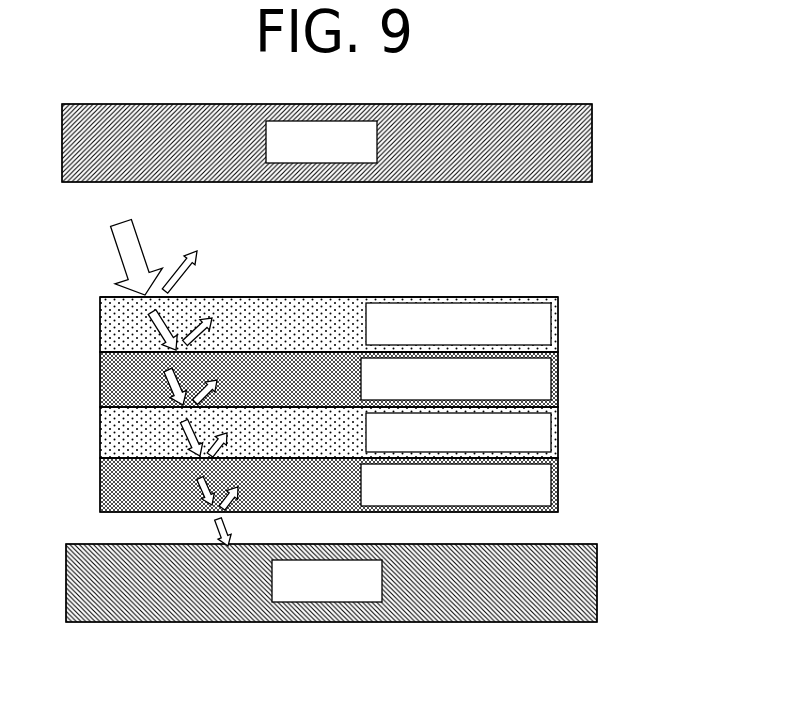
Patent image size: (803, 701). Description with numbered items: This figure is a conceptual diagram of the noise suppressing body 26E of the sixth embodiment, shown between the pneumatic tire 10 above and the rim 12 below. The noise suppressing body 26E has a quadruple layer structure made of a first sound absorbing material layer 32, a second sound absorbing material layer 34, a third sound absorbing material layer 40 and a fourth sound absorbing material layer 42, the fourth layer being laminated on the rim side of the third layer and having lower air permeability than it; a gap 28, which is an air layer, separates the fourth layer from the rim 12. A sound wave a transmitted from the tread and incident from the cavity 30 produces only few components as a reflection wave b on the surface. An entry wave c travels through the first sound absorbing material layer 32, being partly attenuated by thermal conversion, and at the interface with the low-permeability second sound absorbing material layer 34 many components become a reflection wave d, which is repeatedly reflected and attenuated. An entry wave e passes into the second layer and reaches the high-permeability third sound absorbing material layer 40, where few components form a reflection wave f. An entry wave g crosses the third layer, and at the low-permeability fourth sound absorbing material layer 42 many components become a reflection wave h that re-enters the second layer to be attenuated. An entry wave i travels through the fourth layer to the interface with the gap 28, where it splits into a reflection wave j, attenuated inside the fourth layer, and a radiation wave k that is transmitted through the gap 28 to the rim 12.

The pneumatic tire 10 is at (592, 141).
The rim 12 is at (597, 582).
The noise suppressing body 26E is at (481, 284).
The gap 28 is at (523, 530).
The cavity 30 is at (379, 358).
The first sound absorbing material layer 32 is at (558, 322).
The second sound absorbing material layer 34 is at (558, 378).
The third sound absorbing material layer 40 is at (558, 430).
The fourth sound absorbing material layer 42 is at (558, 483).
The sound wave a is at (118, 265).
The reflection wave b is at (182, 276).
The entry wave c is at (148, 327).
The reflection wave d is at (205, 339).
The entry wave e is at (168, 384).
The reflection wave f is at (210, 389).
The entry wave g is at (185, 432).
The reflection wave h is at (232, 442).
The entry wave i is at (200, 487).
The reflection wave j is at (239, 492).
The radiation wave k is at (216, 527).